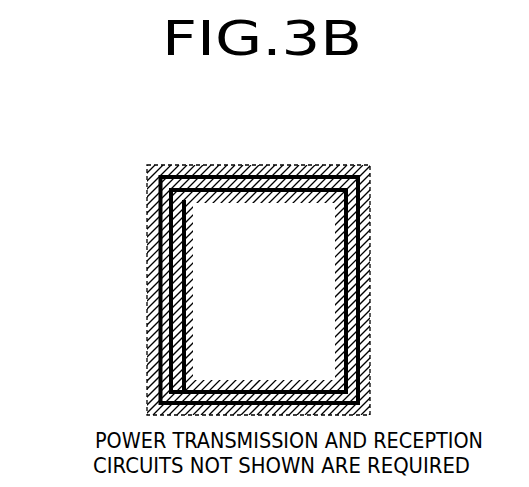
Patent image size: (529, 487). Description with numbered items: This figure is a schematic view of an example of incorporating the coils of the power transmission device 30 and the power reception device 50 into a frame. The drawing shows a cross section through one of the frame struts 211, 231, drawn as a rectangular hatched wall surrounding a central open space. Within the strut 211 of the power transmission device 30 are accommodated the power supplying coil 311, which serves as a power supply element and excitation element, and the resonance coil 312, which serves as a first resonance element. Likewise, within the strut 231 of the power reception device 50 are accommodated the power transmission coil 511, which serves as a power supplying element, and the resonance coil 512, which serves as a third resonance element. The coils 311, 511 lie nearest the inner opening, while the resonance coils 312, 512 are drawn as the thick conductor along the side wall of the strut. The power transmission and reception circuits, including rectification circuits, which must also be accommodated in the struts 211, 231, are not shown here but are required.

The power transmission device 30 is at (264, 253).
The power reception device 50 is at (338, 158).
The strut 211 is at (242, 257).
The strut 231 is at (177, 167).
The power supplying coil 311 is at (264, 290).
The power transmission coil 511 is at (335, 313).
The resonance coil 312 is at (99, 296).
The resonance coil 512 is at (153, 266).